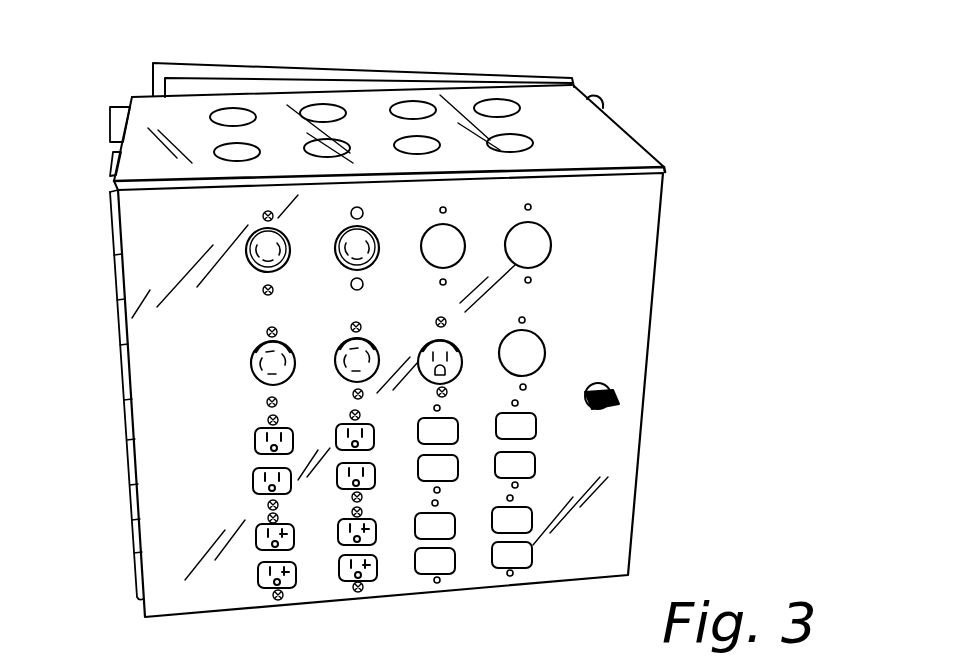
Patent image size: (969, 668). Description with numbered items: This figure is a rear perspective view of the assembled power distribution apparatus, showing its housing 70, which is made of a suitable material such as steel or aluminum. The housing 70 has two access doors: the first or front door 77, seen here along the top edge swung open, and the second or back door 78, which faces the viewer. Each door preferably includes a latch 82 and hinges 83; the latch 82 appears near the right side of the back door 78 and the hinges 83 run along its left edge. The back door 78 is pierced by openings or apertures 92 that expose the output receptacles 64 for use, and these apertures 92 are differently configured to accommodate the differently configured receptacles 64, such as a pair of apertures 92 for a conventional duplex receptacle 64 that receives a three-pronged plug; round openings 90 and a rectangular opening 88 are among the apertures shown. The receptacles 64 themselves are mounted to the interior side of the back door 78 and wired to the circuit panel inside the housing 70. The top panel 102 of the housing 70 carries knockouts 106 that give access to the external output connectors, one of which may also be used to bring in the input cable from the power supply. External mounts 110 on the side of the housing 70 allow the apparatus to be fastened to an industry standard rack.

The housing 70 is at (650, 150).
The front door 77 is at (197, 58).
The top panel 102 is at (162, 113).
The knockouts 106 is at (250, 117).
The external mounts 110 is at (110, 132).
The hinges 83 is at (128, 503).
The back door 78 is at (648, 303).
The output receptacles 64 is at (253, 268).
The round openings 90 is at (548, 262).
The latch 82 is at (608, 395).
The apertures 92 is at (537, 425).
The rectangular opening 88 is at (432, 578).